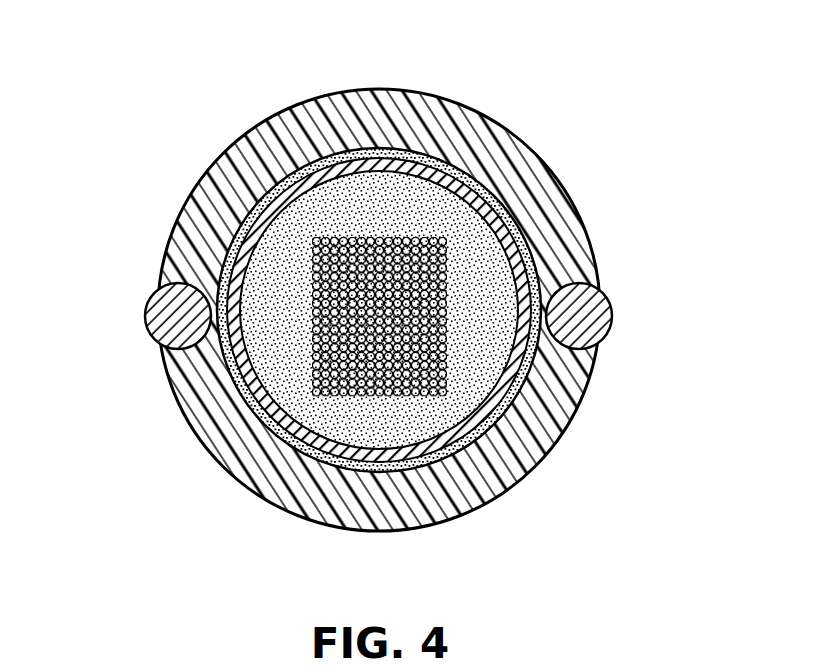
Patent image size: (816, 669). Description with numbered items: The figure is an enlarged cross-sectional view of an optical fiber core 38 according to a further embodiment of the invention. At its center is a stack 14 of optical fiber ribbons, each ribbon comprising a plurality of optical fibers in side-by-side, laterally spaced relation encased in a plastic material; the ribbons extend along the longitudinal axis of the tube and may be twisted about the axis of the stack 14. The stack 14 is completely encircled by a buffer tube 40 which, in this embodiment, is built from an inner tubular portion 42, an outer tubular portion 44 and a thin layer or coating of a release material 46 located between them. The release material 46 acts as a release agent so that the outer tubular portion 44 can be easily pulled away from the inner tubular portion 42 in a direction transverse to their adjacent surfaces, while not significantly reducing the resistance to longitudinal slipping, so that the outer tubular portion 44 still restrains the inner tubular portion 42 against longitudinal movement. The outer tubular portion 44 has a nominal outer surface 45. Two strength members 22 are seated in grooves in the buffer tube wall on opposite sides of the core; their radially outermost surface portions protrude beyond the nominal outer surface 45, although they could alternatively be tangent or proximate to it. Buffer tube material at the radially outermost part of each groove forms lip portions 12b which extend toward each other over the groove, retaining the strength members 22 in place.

The optical fiber core 38 is at (384, 297).
The buffer tube 40 is at (355, 268).
The nominal outer surface 45 is at (342, 88).
The outer tubular portion 44 is at (278, 152).
The inner tubular portion 42 is at (487, 163).
The release material 46 is at (417, 152).
The stack 14 is at (447, 241).
The lip portions 12b is at (384, 313).
The strength members 22 is at (614, 320).